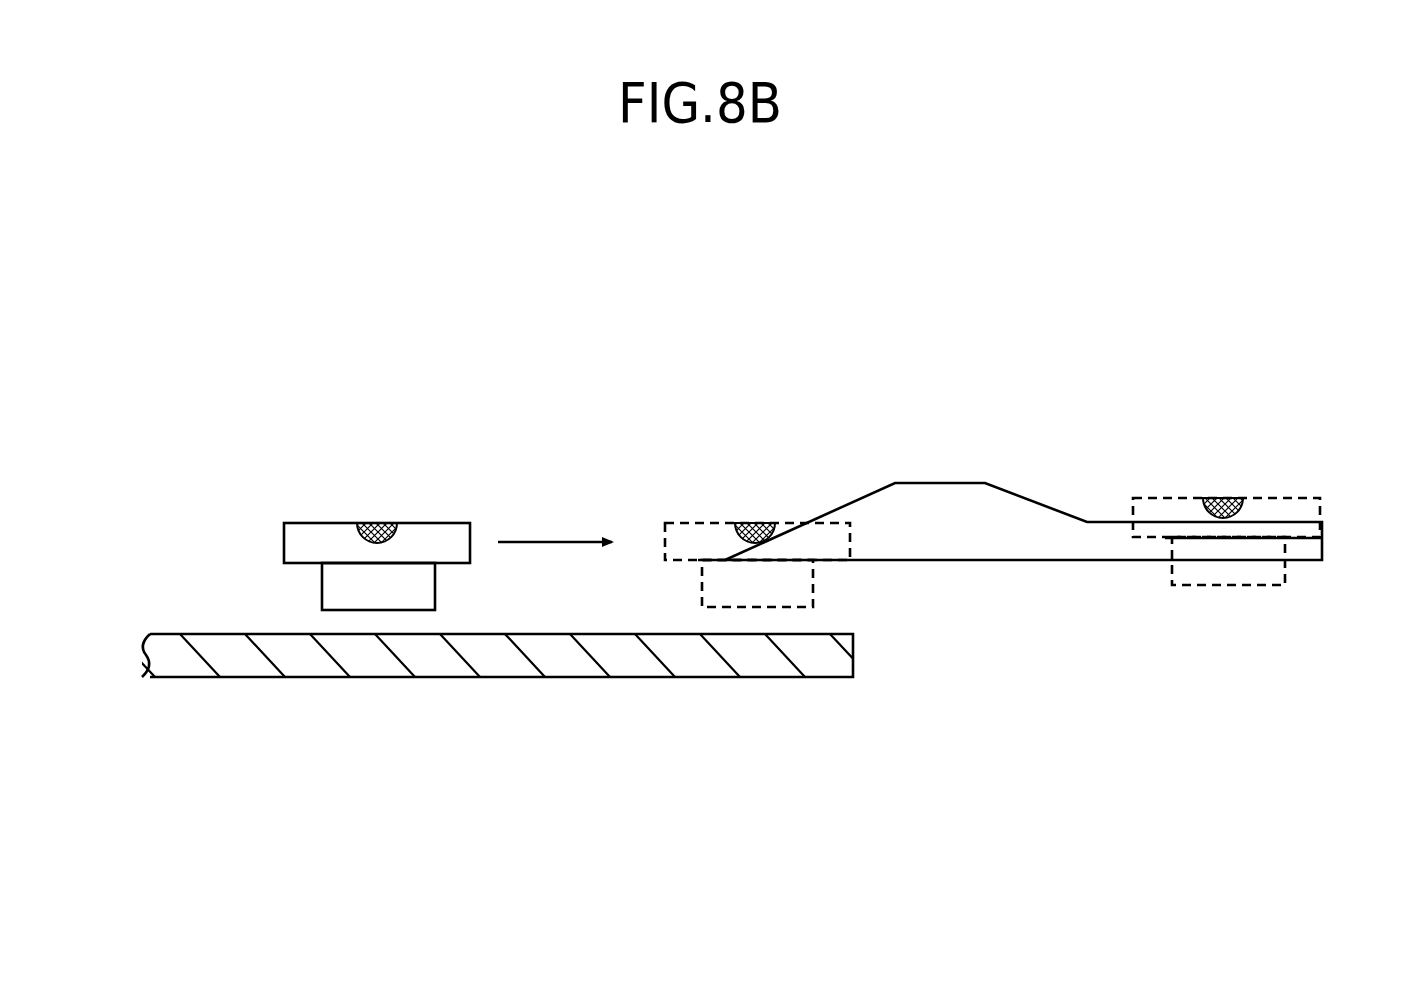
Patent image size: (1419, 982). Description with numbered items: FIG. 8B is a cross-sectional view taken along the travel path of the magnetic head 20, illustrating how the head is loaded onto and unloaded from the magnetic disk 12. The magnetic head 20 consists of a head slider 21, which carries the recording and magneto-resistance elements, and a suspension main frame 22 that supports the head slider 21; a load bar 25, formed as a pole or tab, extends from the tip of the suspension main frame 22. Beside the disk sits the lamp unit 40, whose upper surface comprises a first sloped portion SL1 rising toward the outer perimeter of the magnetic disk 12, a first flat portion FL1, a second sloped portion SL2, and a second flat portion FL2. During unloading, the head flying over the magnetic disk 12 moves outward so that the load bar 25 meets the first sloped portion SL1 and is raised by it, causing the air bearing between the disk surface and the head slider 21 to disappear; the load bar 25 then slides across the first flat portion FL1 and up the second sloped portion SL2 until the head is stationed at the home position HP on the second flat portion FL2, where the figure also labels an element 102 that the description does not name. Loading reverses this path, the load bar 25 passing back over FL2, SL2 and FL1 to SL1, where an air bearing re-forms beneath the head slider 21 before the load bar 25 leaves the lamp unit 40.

The magnetic disk 12 is at (502, 677).
The magnetic head 20 is at (255, 492).
The head slider 21 is at (322, 575).
The suspension main frame 22 is at (440, 523).
The load bar 25 is at (383, 523).
The lamp unit 40 is at (945, 560).
The holding plate 102 is at (1296, 490).
The home position HP is at (1285, 436).
The first sloped portion SL1 is at (835, 507).
The first flat portion FL1 is at (935, 483).
The second sloped portion SL2 is at (1037, 498).
The second flat portion FL2 is at (1115, 522).